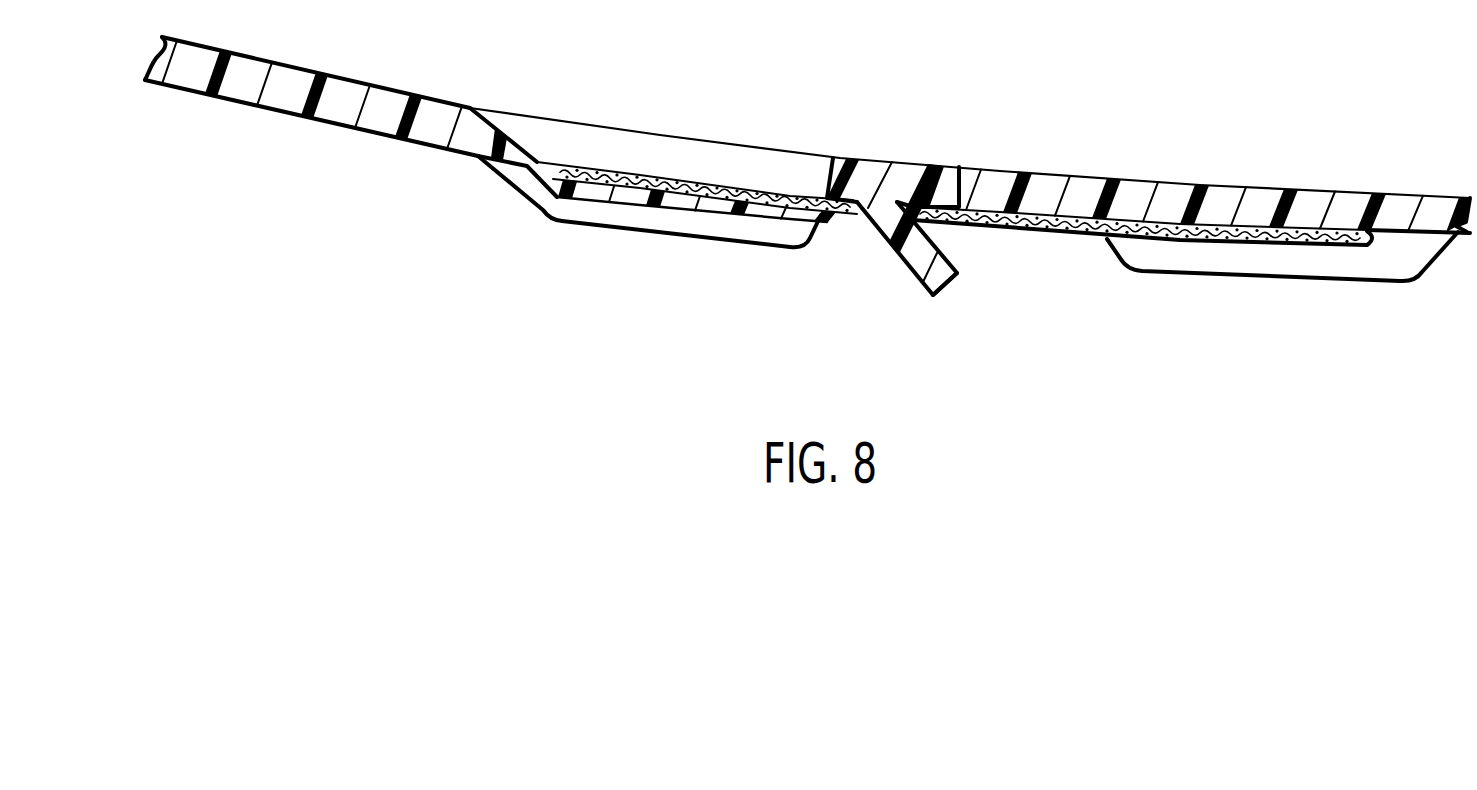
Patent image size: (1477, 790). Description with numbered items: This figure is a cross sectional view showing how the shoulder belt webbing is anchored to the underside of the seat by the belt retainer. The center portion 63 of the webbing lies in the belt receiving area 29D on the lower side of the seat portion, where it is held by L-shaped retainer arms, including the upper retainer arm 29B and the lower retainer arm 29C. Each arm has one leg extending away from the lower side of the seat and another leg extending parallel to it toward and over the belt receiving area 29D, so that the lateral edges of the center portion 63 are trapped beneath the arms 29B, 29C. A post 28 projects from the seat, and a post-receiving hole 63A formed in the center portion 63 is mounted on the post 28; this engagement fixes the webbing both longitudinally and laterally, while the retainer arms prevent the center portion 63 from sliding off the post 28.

The post 28 is at (946, 288).
The upper retainer arm 29B is at (1251, 267).
The lower retainer arm 29C is at (684, 204).
The belt receiving area 29D is at (1004, 362).
The center portion 63 is at (960, 193).
The post-receiving hole 63A is at (862, 220).